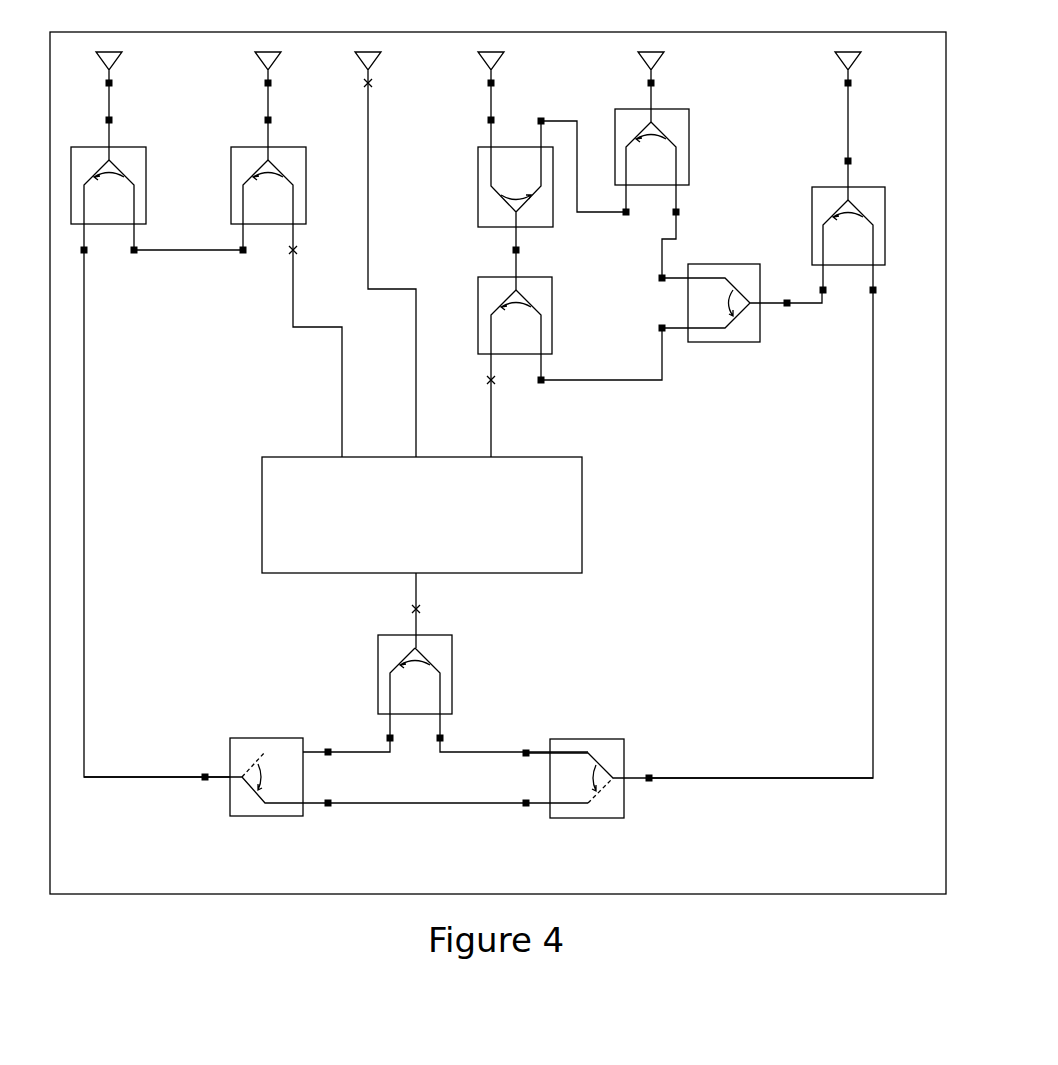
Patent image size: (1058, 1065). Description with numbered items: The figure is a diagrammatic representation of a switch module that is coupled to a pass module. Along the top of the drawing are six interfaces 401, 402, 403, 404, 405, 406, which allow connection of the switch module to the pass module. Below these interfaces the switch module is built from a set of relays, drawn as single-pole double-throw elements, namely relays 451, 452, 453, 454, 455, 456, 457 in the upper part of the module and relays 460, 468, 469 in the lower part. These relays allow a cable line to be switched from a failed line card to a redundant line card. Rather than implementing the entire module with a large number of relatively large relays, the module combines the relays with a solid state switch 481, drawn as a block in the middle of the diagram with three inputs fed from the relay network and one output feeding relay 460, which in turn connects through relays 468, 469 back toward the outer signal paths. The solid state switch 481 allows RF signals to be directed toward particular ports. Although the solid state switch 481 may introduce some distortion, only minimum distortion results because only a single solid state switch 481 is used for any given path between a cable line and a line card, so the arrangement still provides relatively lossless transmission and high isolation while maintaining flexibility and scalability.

The interface 401 is at (151, 80).
The interface 402 is at (310, 80).
The interface 403 is at (410, 229).
The interface 404 is at (533, 60).
The interface 405 is at (693, 61).
The interface 406 is at (890, 100).
The relay 451 is at (799, 473).
The relay 452 is at (741, 322).
The relay 453 is at (152, 448).
The relay 454 is at (296, 286).
The relay 455 is at (520, 204).
The relay 456 is at (677, 178).
The relay 457 is at (547, 367).
The relay 460 is at (445, 693).
The relay 468 is at (698, 799).
The relay 469 is at (305, 756).
The solid state switch 481 is at (422, 536).